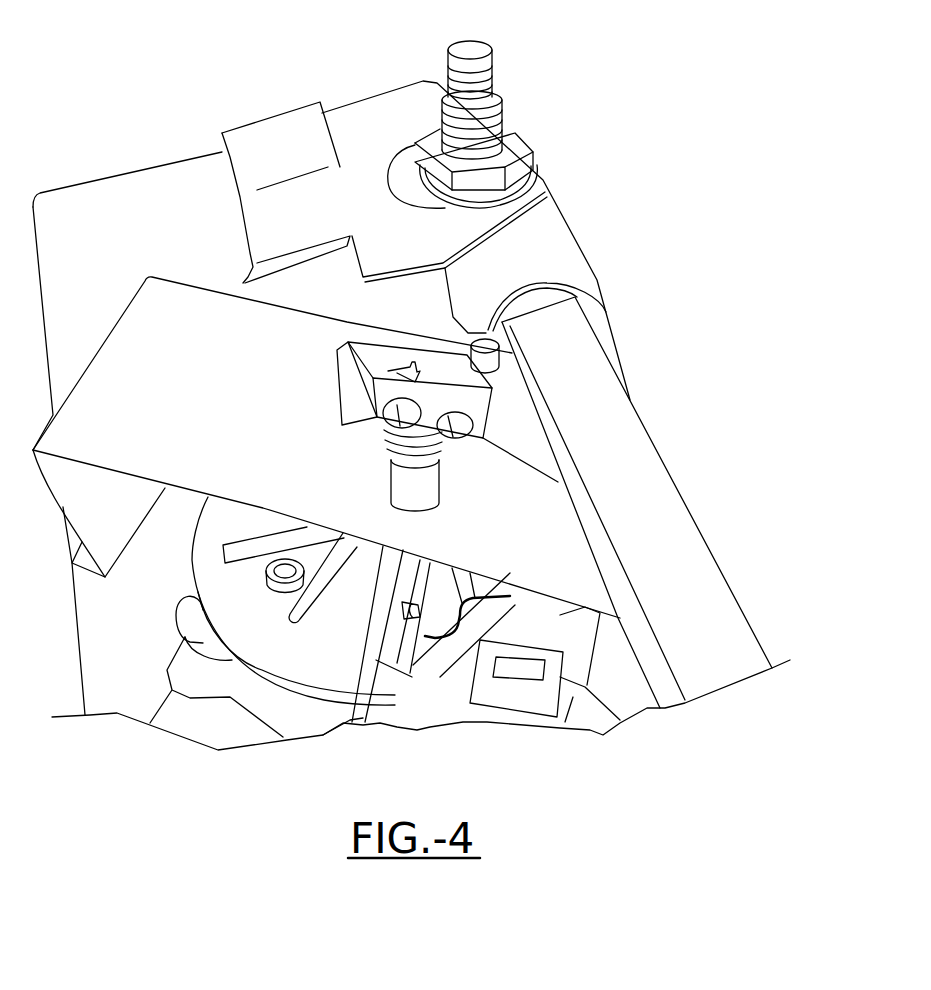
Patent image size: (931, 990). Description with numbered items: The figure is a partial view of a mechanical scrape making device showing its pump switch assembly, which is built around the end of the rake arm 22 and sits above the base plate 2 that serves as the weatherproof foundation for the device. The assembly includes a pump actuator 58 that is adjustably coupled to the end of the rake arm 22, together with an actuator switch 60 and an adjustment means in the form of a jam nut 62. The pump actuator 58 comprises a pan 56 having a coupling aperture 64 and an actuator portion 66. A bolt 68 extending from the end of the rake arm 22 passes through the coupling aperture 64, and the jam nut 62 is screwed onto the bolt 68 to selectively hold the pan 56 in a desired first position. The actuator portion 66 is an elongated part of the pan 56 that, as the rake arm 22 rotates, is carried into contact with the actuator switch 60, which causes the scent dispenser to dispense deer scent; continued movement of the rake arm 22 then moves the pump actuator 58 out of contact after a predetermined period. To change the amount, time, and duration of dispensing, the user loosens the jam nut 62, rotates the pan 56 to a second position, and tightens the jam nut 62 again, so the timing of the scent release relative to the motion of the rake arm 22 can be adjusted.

The base plate 2 is at (92, 622).
The rake arm 22 is at (640, 478).
The pan 56 is at (606, 310).
The pump actuator 58 is at (350, 50).
The actuator switch 60 is at (413, 358).
The jam nut 62 is at (487, 175).
The coupling aperture 64 is at (405, 172).
The actuator portion 66 is at (297, 208).
The bolt 68 is at (495, 68).